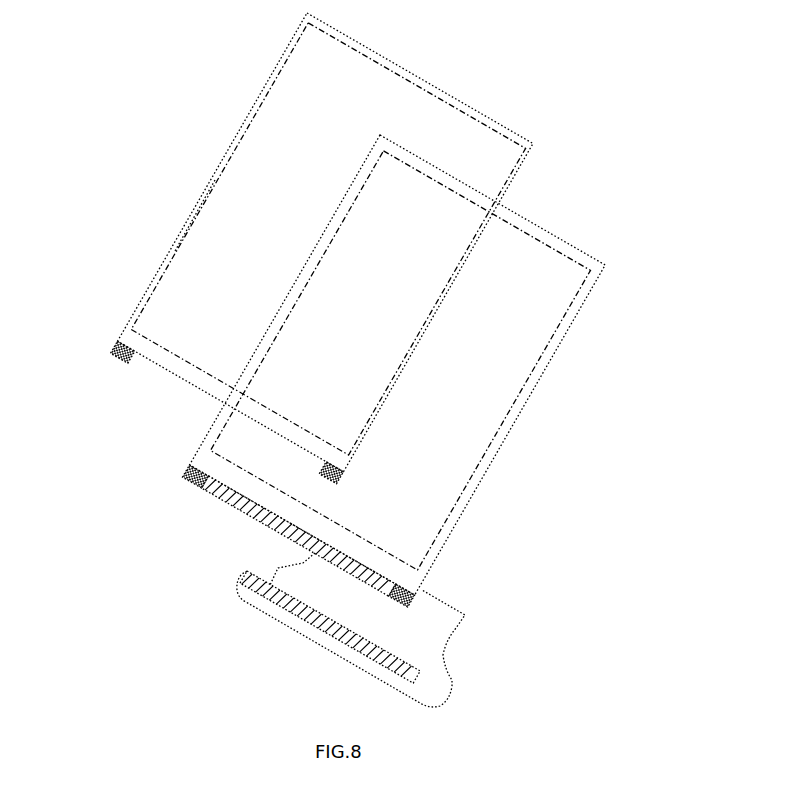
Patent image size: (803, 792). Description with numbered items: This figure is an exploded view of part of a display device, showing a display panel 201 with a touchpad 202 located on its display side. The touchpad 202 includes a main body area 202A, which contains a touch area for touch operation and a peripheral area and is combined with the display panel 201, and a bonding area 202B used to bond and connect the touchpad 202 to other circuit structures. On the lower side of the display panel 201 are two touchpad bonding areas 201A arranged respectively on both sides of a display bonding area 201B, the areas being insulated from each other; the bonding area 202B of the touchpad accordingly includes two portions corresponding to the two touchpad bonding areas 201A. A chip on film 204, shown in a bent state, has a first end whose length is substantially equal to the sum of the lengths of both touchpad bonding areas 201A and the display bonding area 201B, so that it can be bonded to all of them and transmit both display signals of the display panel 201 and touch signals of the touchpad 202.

The display panel 201 is at (545, 238).
The touchpad bonding area 201A is at (187, 472).
The display bonding area 201B is at (268, 517).
The touchpad 202 is at (397, 64).
The main body area 202A is at (247, 181).
The bonding area 202B is at (122, 350).
The chip on film 204 is at (443, 630).